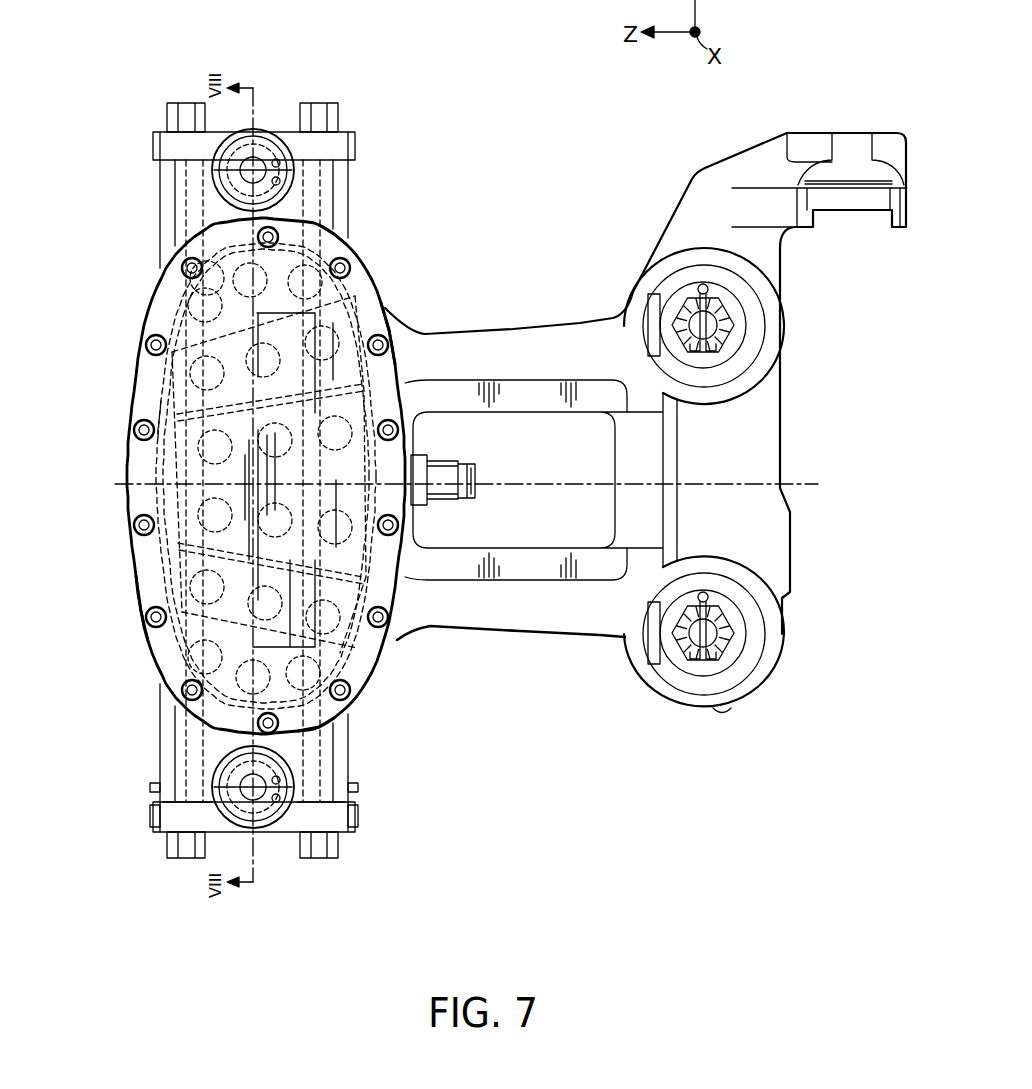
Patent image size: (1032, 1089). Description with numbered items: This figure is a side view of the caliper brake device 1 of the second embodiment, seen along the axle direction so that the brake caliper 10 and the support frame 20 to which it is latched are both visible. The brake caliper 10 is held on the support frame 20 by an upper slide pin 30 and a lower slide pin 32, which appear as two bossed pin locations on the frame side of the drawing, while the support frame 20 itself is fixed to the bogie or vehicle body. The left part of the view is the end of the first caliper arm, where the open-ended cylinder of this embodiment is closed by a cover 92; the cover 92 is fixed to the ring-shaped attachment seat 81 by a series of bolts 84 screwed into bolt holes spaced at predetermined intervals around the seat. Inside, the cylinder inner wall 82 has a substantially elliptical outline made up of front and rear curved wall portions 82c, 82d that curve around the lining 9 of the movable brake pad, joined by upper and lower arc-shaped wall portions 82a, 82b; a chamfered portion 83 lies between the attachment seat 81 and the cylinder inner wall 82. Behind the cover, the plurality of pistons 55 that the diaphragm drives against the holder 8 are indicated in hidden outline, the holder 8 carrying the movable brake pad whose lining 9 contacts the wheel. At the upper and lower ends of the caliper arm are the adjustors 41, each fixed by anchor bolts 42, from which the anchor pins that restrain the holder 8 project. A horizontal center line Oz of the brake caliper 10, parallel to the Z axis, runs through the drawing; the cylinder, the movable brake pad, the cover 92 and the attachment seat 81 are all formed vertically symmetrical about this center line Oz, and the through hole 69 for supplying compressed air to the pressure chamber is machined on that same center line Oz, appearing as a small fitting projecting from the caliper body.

The caliper brake device 1 is at (149, 113).
The holder 8 is at (330, 766).
The lining 9 is at (160, 467).
The brake caliper 10 is at (580, 630).
The support frame 20 is at (757, 420).
The upper slide pin 30 is at (707, 327).
The lower slide pin 32 is at (703, 633).
The adjustor 41 is at (263, 150).
The anchor bolt 42 is at (318, 103).
The piston 55 is at (355, 632).
The through hole 69 is at (440, 483).
The attachment seat 81 is at (380, 272).
The cylinder inner wall 82 is at (160, 572).
The upper arc-shaped wall portion 82a is at (337, 227).
The lower arc-shaped wall portion 82b is at (350, 727).
The front curved wall portion 82c is at (380, 310).
The rear curved wall portion 82d is at (160, 396).
The chamfered portion 83 is at (158, 502).
The bolt 84 is at (388, 622).
The cover 92 is at (142, 654).
The center line Oz is at (817, 481).